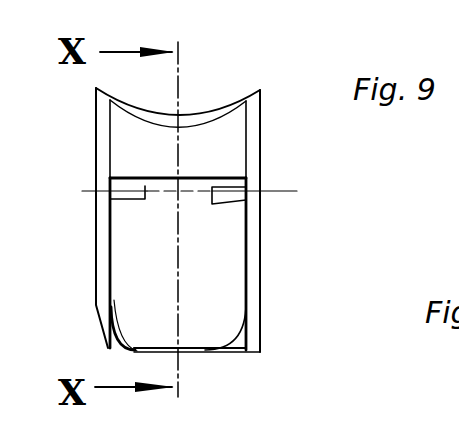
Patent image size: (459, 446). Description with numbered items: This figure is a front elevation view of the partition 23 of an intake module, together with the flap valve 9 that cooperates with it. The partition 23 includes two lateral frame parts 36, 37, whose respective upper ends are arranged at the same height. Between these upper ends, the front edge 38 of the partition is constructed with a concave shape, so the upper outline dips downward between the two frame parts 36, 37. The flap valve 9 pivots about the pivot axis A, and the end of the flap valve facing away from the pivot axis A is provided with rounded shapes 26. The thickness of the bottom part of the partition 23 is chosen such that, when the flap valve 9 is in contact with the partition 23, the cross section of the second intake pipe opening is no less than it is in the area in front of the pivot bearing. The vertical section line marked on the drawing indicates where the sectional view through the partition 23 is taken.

The flap valve 9 is at (212, 293).
The partition 23 is at (228, 350).
The rounded shapes 26 is at (230, 337).
The lateral frame part 36 is at (100, 250).
The lateral frame part 37 is at (255, 250).
The front edge 38 is at (205, 108).
The pivot axis A is at (278, 191).